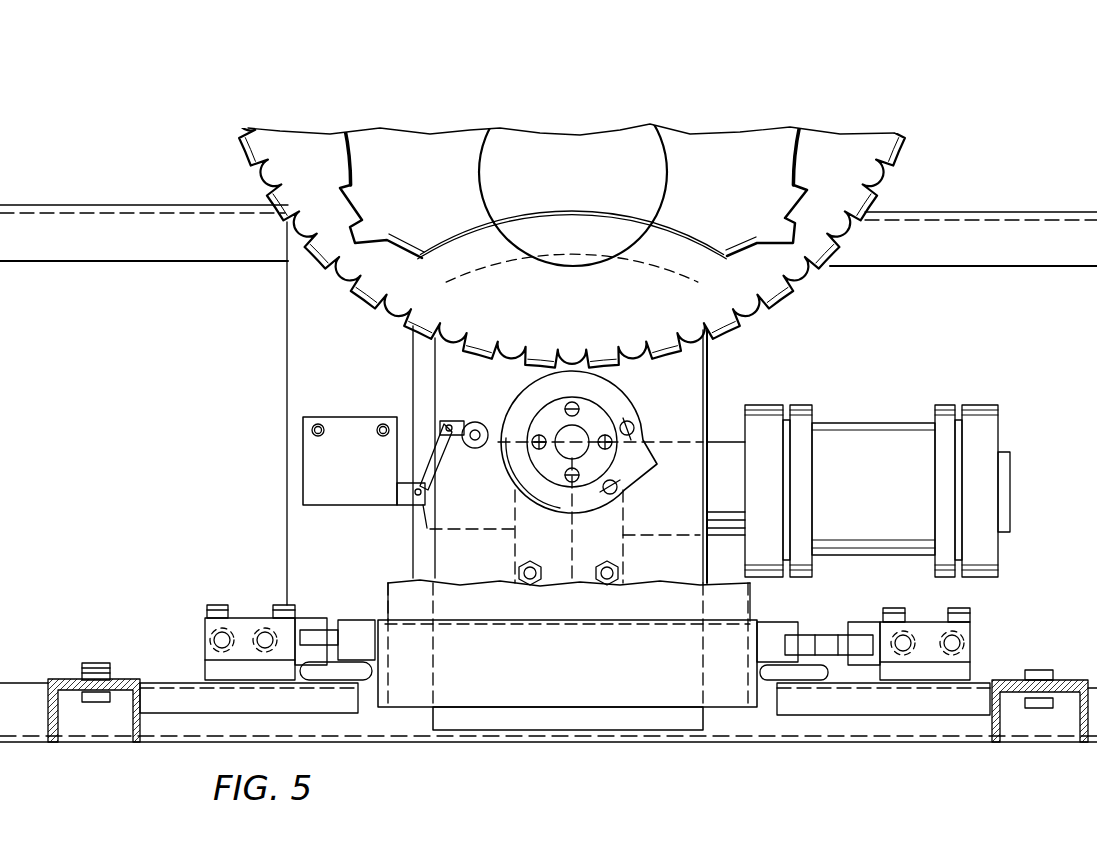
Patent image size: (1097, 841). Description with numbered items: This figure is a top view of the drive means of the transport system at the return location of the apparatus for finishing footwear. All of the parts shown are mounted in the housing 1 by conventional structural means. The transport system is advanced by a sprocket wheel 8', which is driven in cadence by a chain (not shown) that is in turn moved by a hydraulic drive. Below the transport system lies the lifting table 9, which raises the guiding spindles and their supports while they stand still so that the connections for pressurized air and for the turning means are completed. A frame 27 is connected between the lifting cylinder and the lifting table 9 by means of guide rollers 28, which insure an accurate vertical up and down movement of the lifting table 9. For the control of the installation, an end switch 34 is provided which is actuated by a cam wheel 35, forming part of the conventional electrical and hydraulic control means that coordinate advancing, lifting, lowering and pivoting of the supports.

The housing 1 is at (1011, 250).
The sprocket wheel 8' is at (572, 184).
The lifting table 9 is at (685, 375).
The frame 27 is at (568, 695).
The guide rollers 28 is at (362, 682).
The end switch 34 is at (328, 457).
The cam wheel 35 is at (636, 464).